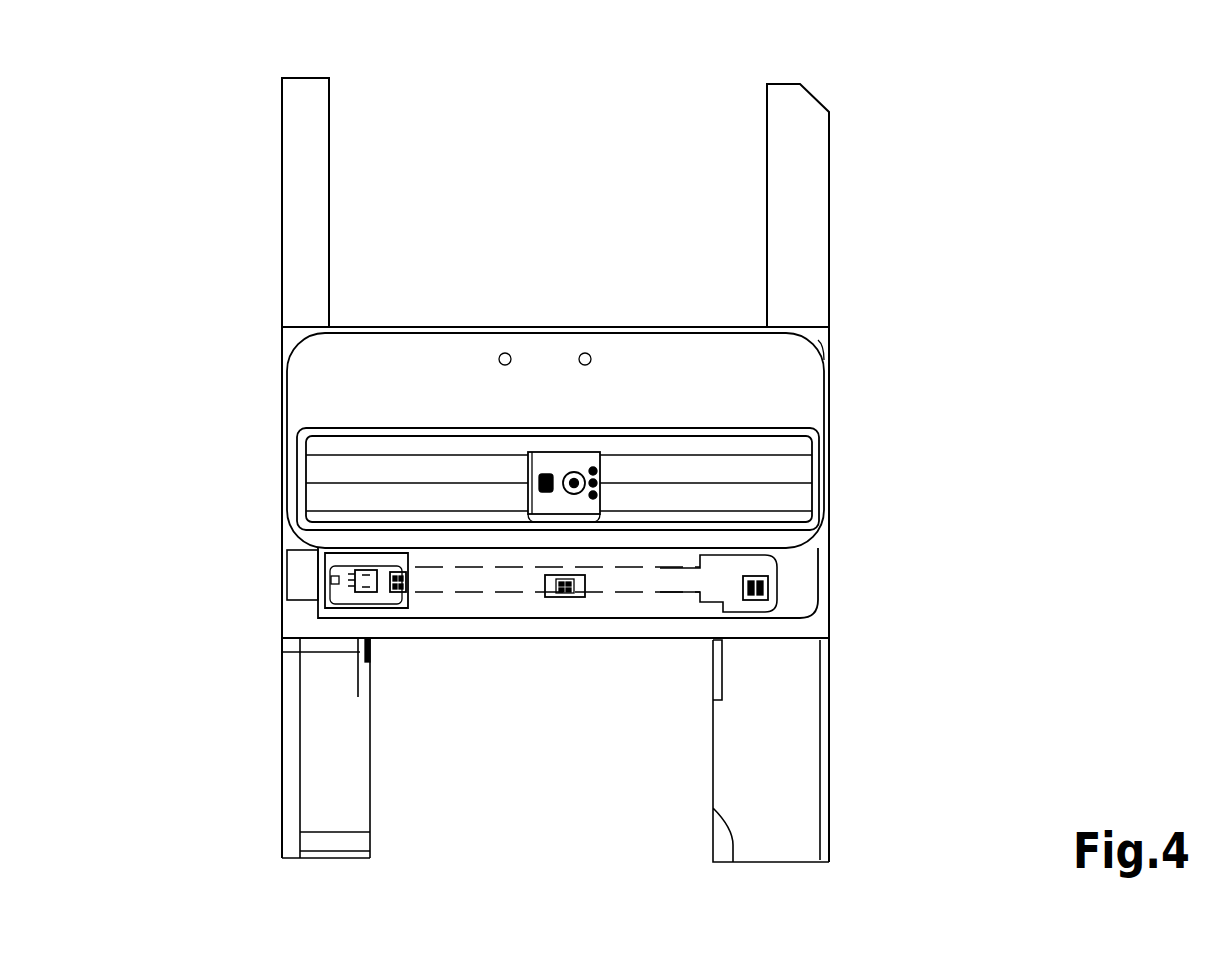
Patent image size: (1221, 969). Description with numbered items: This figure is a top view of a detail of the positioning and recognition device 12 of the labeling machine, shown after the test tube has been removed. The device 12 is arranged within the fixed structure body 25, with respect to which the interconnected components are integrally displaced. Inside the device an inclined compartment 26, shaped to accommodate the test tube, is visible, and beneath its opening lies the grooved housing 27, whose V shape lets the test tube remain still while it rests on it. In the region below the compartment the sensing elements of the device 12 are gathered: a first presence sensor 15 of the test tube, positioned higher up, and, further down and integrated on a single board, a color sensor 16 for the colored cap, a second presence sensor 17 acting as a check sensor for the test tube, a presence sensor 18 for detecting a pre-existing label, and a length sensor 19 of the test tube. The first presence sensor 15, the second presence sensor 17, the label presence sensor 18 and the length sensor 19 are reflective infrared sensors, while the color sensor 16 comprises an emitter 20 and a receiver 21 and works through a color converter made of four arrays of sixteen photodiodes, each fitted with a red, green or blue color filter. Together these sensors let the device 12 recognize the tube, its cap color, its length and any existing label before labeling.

The positioning and recognition device 12 is at (852, 512).
The first presence sensor 15 is at (545, 478).
The color sensor 16 is at (340, 565).
The second presence sensor 17 is at (410, 597).
The presence sensor of a pre-existing label 18 is at (567, 597).
The length sensor 19 is at (745, 598).
The emitter 20 is at (325, 584).
The receiver 21 is at (360, 585).
The fixed structure body 25 is at (787, 700).
The inclined compartment 26 is at (460, 368).
The grooved housing 27 is at (635, 472).